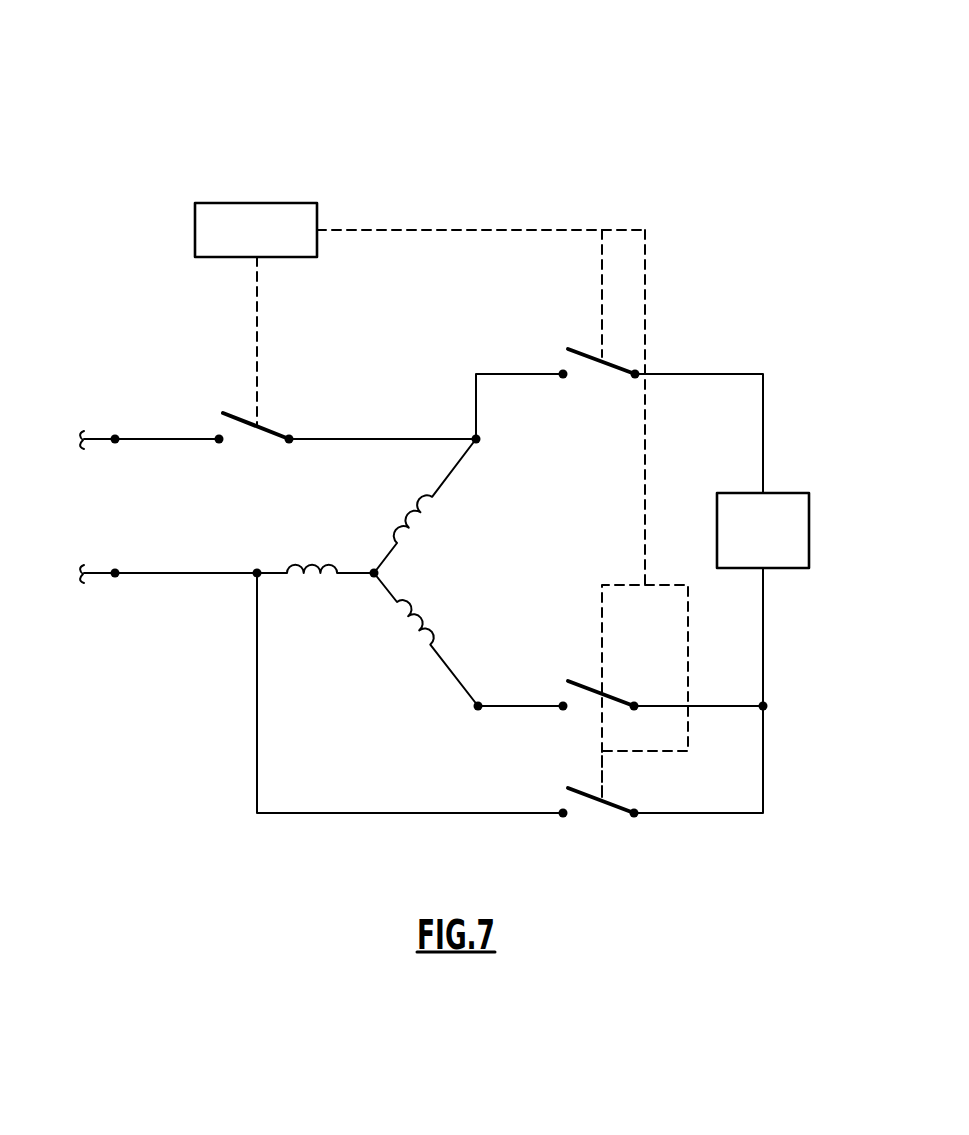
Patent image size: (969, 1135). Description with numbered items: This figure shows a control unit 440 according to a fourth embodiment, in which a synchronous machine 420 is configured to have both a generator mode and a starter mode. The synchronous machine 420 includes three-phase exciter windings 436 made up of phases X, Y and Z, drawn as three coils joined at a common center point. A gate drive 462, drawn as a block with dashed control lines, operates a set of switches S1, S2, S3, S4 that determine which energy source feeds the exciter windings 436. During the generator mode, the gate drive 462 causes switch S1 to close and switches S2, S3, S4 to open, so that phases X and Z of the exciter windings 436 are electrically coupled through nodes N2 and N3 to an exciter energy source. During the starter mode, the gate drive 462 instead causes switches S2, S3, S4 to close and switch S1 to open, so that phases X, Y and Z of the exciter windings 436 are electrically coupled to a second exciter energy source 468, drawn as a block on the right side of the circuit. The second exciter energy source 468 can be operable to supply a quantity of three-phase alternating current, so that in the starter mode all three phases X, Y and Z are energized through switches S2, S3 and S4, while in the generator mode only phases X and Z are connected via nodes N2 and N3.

The synchronous machine 420 is at (165, 88).
The control unit 440 is at (480, 505).
The gate drive 462 is at (195, 223).
The three-phase exciter windings 436 is at (396, 420).
The second exciter energy source 468 is at (809, 528).
The node N2 is at (115, 437).
The node N3 is at (115, 570).
The switch S1 is at (270, 424).
The switch S2 is at (582, 348).
The switch S3 is at (612, 691).
The switch S4 is at (613, 806).
The phase X is at (479, 442).
The phase Y is at (476, 709).
The phase Z is at (255, 570).